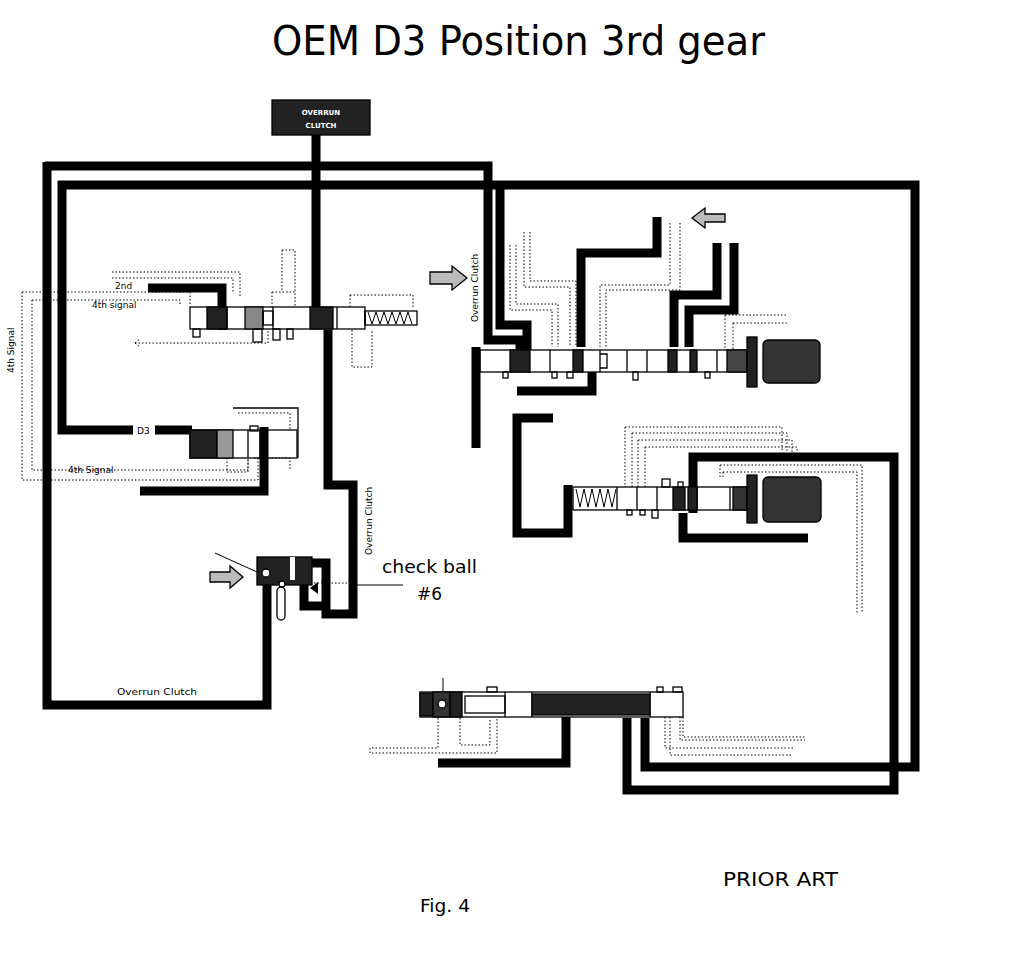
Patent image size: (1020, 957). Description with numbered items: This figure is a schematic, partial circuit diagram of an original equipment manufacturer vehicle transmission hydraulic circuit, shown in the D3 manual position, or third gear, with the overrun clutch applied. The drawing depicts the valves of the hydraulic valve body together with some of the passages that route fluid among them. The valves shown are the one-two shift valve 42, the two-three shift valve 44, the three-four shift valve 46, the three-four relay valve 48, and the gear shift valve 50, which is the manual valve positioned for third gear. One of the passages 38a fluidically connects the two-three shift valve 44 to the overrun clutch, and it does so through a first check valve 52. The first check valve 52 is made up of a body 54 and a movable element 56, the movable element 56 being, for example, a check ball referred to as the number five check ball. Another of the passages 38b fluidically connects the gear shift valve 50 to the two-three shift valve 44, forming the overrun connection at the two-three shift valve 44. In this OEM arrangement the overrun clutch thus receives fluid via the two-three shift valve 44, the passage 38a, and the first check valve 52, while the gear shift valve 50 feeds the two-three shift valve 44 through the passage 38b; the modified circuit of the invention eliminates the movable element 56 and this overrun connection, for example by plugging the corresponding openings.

The passage 38a is at (442, 162).
The passage 38b is at (680, 262).
The 1-2 shift valve 42 is at (743, 525).
The 2-3 shift valve 44 is at (747, 392).
The 3-4 shift valve 46 is at (207, 473).
The 3-4 relay valve 48 is at (237, 297).
The gear shift valve 50 is at (586, 690).
The first check valve 52 is at (258, 573).
The body 54 is at (282, 558).
The movable element 56 is at (288, 590).